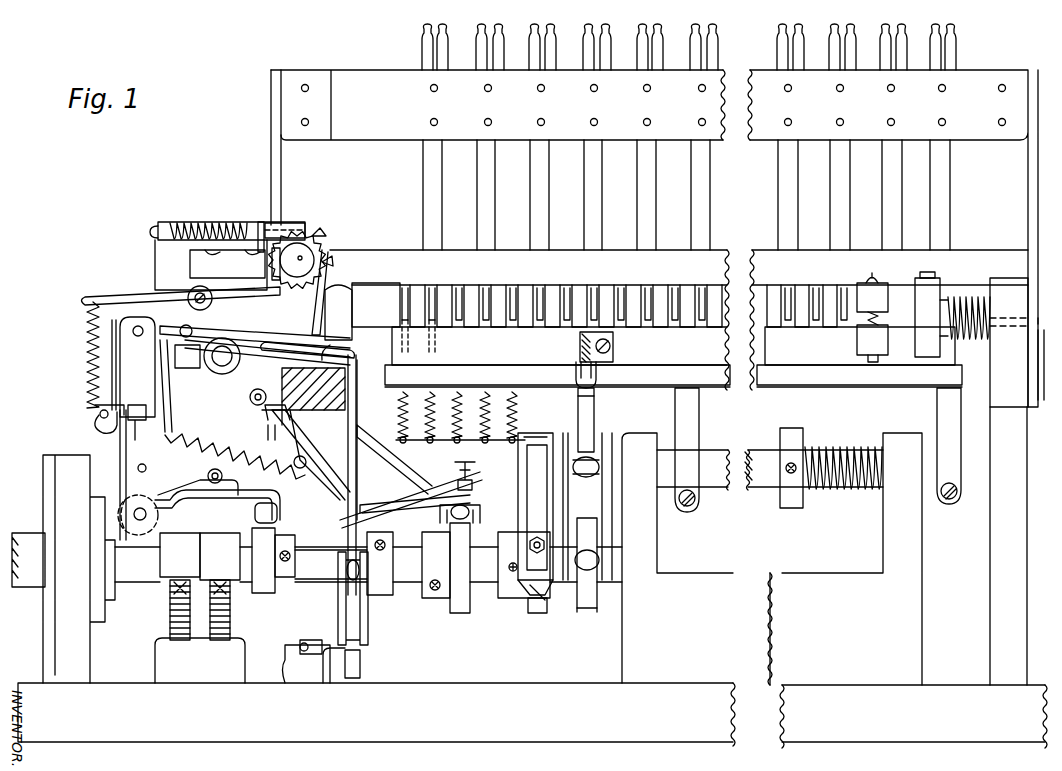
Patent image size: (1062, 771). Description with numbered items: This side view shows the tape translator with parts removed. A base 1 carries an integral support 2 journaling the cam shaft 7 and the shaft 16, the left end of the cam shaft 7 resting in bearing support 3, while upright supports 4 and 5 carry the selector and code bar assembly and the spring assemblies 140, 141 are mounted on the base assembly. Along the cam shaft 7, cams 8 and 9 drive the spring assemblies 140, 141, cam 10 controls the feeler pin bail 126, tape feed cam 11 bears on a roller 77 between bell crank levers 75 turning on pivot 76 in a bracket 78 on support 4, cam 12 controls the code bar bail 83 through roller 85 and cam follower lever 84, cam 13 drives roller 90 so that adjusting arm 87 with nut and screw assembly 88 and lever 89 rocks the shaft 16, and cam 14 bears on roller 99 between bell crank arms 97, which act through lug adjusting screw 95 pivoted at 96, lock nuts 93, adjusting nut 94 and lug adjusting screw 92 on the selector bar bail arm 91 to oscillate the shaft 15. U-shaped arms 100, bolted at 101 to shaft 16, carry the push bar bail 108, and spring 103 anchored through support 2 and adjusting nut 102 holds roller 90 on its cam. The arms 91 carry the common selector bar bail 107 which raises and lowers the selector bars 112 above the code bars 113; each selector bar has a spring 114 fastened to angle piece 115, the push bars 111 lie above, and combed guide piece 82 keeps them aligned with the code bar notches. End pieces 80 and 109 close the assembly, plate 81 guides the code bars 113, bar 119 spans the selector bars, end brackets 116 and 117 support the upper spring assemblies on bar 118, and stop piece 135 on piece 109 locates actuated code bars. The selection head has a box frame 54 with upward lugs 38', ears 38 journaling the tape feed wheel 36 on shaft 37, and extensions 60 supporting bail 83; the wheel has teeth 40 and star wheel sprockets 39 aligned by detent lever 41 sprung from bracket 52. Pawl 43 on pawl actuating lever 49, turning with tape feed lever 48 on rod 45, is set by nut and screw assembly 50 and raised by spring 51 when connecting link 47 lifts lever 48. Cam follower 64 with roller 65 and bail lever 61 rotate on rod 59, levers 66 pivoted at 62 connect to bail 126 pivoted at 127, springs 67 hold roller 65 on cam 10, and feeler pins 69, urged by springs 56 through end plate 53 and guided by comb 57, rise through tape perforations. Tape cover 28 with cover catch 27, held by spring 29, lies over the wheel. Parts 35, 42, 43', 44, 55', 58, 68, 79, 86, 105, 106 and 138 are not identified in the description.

The base 1 is at (28, 688).
The support 2 is at (668, 590).
The bearing support 3 is at (80, 658).
The upright support 4 is at (290, 670).
The upright support 5 is at (1000, 573).
The cam shaft 7 is at (27, 537).
The cam 8 is at (168, 558).
The cam 9 is at (211, 537).
The feeler pin cam 10 is at (263, 590).
The tape feed cam 11 is at (364, 531).
The cam 12 is at (452, 609).
The cam 13 is at (540, 612).
The cam 14 is at (588, 606).
The shaft 15 is at (902, 284).
The shaft 16 is at (717, 453).
The cover catch 27 is at (261, 221).
The tape cover 28 is at (291, 223).
The spring 29 is at (211, 221).
The hook 35 is at (154, 229).
The tape feed wheel 36 is at (318, 246).
The shaft 37 is at (295, 260).
The ears 38 is at (259, 264).
The lugs 38' is at (197, 265).
The star wheel sprockets 39 is at (337, 261).
The teeth 40 is at (314, 236).
The detent lever 41 is at (112, 296).
The pivot 42 is at (206, 297).
The pawl 43 is at (309, 292).
The spring 43' is at (80, 355).
The link 44 is at (334, 342).
The rod 45 is at (184, 326).
The connecting link 47 is at (356, 400).
The tape feed lever 48 is at (200, 386).
The pawl actuating lever 49 is at (258, 328).
The adjusting nut and screw assembly 50 is at (135, 421).
The spring 51 is at (191, 444).
The bracket 52 is at (137, 360).
The U-shaped end plate 53 is at (109, 356).
The box shaped frame 54 is at (130, 447).
The recess 55' is at (232, 260).
The feeler pin springs 56 is at (97, 410).
The comb 57 is at (250, 396).
The disc 58 is at (130, 508).
The rod 59 is at (138, 508).
The extensions 60 is at (308, 455).
The bail lever 61 is at (186, 486).
The pivot 62 is at (210, 472).
The cam follower 64 is at (202, 497).
The roller 65 is at (254, 511).
The levers 66 is at (235, 456).
The springs 67 is at (187, 356).
The pin 68 is at (142, 459).
The feeler pins 69 is at (279, 420).
The bell crank levers 75 is at (342, 601).
The pivot 76 is at (326, 636).
The roller 77 is at (340, 555).
The bracket 78 is at (328, 649).
The block 79 is at (360, 648).
The end piece 80 is at (308, 350).
The plate 81 is at (344, 313).
The combed guide piece 82 is at (388, 275).
The code bar bail 83 is at (350, 462).
The cam follower lever 84 is at (416, 498).
The roller 85 is at (464, 520).
The screw 86 is at (472, 474).
The adjusting arm 87 is at (537, 437).
The adjusting nut and screw assembly 88 is at (537, 507).
The lever 89 is at (560, 496).
The roller 90 is at (538, 590).
The selector bar bail arm 91 is at (580, 338).
The lug adjusting screw 92 is at (576, 378).
The lock nuts 93 is at (594, 392).
The adjusting nut 94 is at (595, 414).
The lug adjusting screw 95 is at (600, 464).
The pivot 96 is at (563, 470).
The bell crank shaped arms 97 is at (613, 500).
The roller 99 is at (598, 572).
The U-shaped arms 100 is at (687, 409).
The bolts 101 is at (695, 501).
The adjusting nut 102 is at (784, 501).
The spring 103 is at (845, 493).
The block 105 is at (940, 281).
The spring 106 is at (965, 328).
The common selector bar bail 107 is at (690, 348).
The push bar bail 108 is at (495, 374).
The end piece 109 is at (996, 392).
The push bars 111 is at (422, 285).
The selector bars 112 is at (427, 288).
The code bars 113 is at (1038, 366).
The spring 114 is at (398, 412).
The angle piece 115 is at (425, 441).
The end bracket 116 is at (1028, 203).
The end bracket 117 is at (276, 160).
The bar 118 is at (347, 138).
The bar 119 is at (576, 258).
The feeler pin bail 126 is at (224, 348).
The pivot 127 is at (228, 366).
The stop piece 135 is at (1014, 333).
The rod 138 is at (430, 181).
The spring assembly 140 is at (172, 627).
The spring assembly 141 is at (230, 627).